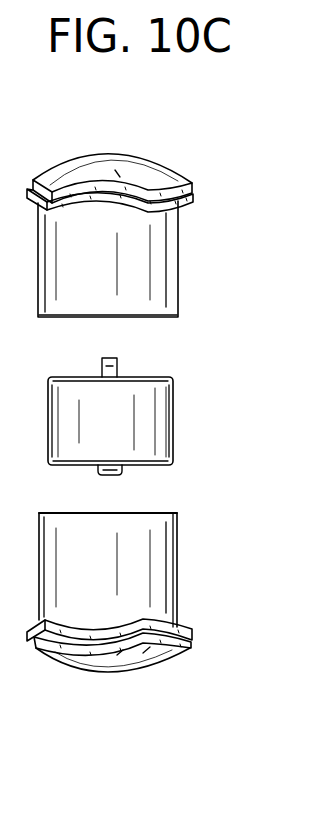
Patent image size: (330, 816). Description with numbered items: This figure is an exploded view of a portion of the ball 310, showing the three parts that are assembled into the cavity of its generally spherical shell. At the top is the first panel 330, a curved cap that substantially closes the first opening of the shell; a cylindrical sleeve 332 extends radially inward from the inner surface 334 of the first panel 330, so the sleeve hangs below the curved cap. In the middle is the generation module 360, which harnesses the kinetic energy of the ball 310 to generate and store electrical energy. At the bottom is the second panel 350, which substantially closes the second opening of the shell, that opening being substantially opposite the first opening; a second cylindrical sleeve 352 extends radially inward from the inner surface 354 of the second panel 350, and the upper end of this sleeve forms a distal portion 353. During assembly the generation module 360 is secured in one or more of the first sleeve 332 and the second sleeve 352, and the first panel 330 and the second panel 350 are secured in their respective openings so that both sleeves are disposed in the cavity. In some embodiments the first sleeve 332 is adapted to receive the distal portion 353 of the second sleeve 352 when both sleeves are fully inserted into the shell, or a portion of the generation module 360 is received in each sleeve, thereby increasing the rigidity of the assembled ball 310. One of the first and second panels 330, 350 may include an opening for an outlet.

The ball 310 is at (206, 235).
The first panel 330 is at (148, 170).
The inner surface of the first panel 334 is at (193, 197).
The cylindrical sleeve 332 is at (178, 275).
The generation module 360 is at (165, 412).
The distal portion of the second sleeve 353 is at (157, 513).
The cylindrical sleeve 352 is at (177, 552).
The inner surface of the second panel 354 is at (130, 625).
The second panel 350 is at (145, 655).